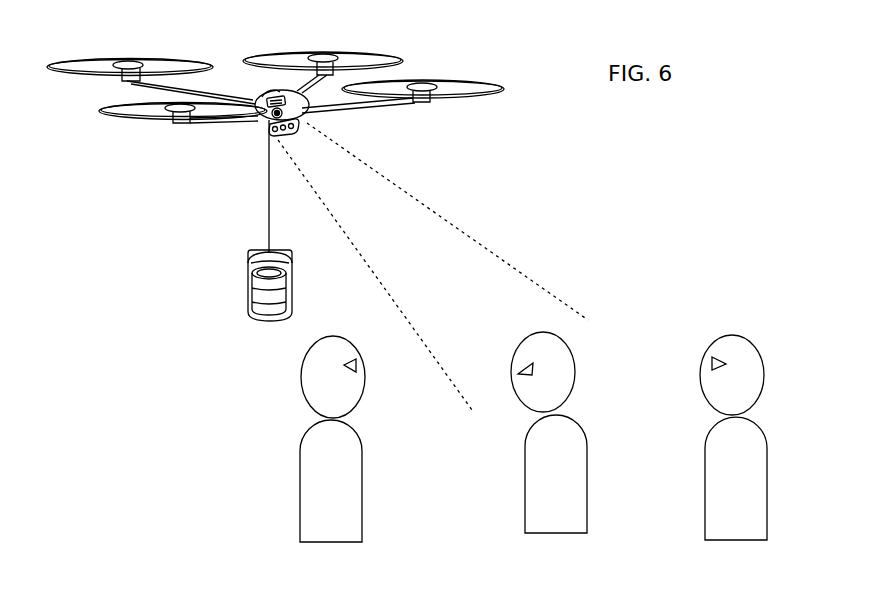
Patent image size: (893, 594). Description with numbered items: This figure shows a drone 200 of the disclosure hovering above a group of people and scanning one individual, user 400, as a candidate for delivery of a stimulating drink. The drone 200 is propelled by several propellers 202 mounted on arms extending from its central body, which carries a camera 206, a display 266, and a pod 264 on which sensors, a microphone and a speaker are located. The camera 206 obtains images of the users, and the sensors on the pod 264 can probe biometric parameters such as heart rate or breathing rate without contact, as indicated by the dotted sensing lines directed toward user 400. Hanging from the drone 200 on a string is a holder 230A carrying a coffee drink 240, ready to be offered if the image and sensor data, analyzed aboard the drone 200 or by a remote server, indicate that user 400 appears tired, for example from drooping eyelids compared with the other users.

The drone 200 is at (167, 137).
The propeller 202 is at (463, 98).
The camera 206 is at (268, 118).
The holder 230A is at (218, 265).
The coffee drink 240 is at (257, 300).
The pod 264 is at (295, 136).
The display 266 is at (262, 95).
The user 400 is at (513, 462).